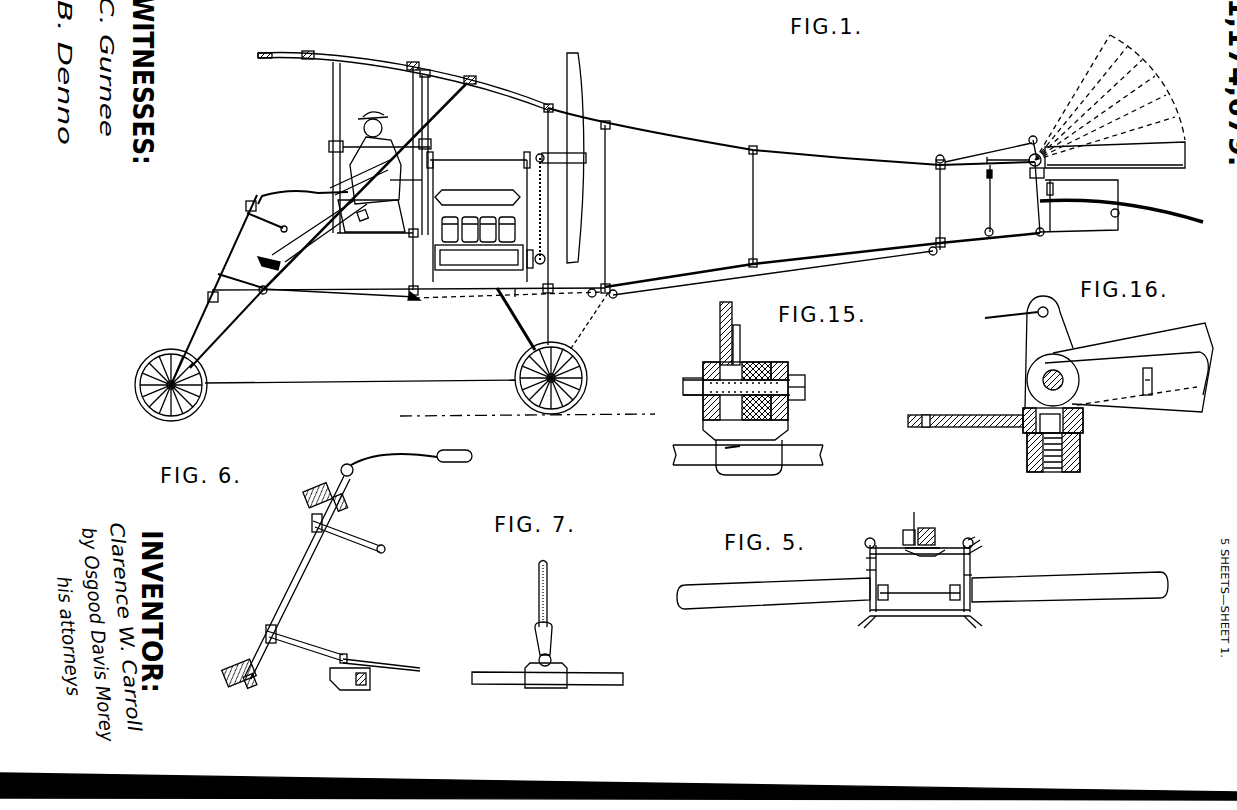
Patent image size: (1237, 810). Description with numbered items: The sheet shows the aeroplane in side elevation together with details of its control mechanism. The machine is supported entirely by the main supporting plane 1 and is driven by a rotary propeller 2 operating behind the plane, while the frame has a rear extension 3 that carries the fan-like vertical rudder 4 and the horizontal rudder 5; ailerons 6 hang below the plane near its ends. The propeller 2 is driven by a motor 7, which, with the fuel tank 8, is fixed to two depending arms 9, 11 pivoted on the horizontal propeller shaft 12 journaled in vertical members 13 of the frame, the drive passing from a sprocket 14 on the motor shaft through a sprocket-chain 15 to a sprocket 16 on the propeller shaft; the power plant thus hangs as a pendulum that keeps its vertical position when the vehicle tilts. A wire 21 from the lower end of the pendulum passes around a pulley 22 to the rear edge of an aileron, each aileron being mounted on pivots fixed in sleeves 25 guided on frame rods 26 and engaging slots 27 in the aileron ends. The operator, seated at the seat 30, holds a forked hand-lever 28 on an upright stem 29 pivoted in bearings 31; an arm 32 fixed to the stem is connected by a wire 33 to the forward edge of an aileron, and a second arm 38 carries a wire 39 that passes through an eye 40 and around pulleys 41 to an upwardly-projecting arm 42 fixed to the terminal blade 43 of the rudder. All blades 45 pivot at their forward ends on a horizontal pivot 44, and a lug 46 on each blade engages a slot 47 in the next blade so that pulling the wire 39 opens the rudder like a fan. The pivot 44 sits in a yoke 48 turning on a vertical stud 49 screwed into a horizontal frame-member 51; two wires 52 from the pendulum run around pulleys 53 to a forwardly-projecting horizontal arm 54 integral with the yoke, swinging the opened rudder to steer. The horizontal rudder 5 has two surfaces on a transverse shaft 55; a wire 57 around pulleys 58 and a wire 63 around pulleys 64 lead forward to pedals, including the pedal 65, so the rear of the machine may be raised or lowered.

In FIG. 1, the main supporting plane 1 is at (392, 57).
In FIG. 1, the rotary propeller 2 is at (580, 100).
In FIG. 1, the rear extension 3 is at (840, 156).
In FIG. 5, the rear extension 3 is at (866, 541).
In FIG. 1, the vertical rudder 4 is at (1115, 155).
In FIG. 5, the vertical rudder 4 is at (927, 530).
In FIG. 1, the horizontal rudder 5 is at (1156, 206).
In FIG. 5, the horizontal rudder 5 is at (922, 590).
In FIG. 1, the aileron 6 is at (395, 140).
In FIG. 1, the motor 7 is at (465, 262).
In FIG. 1, the fuel tank 8 is at (480, 190).
In FIG. 1, the depending arm 9 is at (437, 186).
In FIG. 1, the depending arm 11 is at (524, 181).
In FIG. 1, the propeller shaft 12 is at (480, 158).
In FIG. 1, the vertical member 13 is at (545, 128).
In FIG. 1, the sprocket 14 is at (545, 262).
In FIG. 1, the sprocket-chain 15 is at (545, 219).
In FIG. 1, the sprocket 16 is at (536, 155).
In FIG. 1, the wire 21 is at (430, 106).
In FIG. 1, the pulley 22 is at (431, 78).
In FIG. 1, the sleeve 25 is at (436, 143).
In FIG. 1, the rod 26 is at (341, 100).
In FIG. 1, the slot 27 is at (329, 145).
In FIG. 1, the hand-lever 28 is at (290, 192).
In FIG. 6, the hand-lever 28 is at (405, 462).
In FIG. 1, the upright stem 29 is at (232, 247).
In FIG. 6, the upright stem 29 is at (298, 576).
In FIG. 7, the upright stem 29 is at (538, 588).
In FIG. 1, the operator's seat 30 is at (350, 236).
In FIG. 1, the bearing 31 is at (245, 207).
In FIG. 6, the bearing 31 is at (346, 504).
In FIG. 1, the arm 32 is at (267, 222).
In FIG. 6, the arm 32 is at (348, 541).
In FIG. 1, the wire 33 is at (291, 222).
In FIG. 6, the wire 33 is at (386, 546).
In FIG. 1, the arm 38 is at (228, 277).
In FIG. 6, the arm 38 is at (310, 642).
In FIG. 7, the arm 38 is at (553, 643).
In FIG. 1, the wire 39 is at (298, 291).
In FIG. 16, the wire 39 is at (998, 312).
In FIG. 6, the wire 39 is at (403, 665).
In FIG. 7, the wire 39 is at (545, 670).
In FIG. 1, the eye 40 is at (258, 295).
In FIG. 6, the eye 40 is at (350, 656).
In FIG. 7, the eye 40 is at (540, 657).
In FIG. 1, the pulley 41 is at (615, 298).
In FIG. 1, the arm 42 is at (1032, 143).
In FIG. 15, the arm 42 is at (720, 339).
In FIG. 16, the arm 42 is at (1049, 352).
In FIG. 5, the arm 42 is at (912, 512).
In FIG. 1, the blade 43 is at (1084, 79).
In FIG. 15, the blade 43 is at (741, 355).
In FIG. 16, the blade 43 is at (1153, 338).
In FIG. 1, the horizontal pivot 44 is at (1031, 167).
In FIG. 15, the horizontal pivot 44 is at (806, 389).
In FIG. 16, the horizontal pivot 44 is at (1043, 380).
In FIG. 5, the horizontal pivot 44 is at (905, 535).
In FIG. 15, the blade 45 is at (760, 362).
In FIG. 16, the blade 45 is at (1126, 373).
In FIG. 16, the lug 46 is at (1142, 372).
In FIG. 16, the slot 47 is at (1143, 386).
In FIG. 1, the yoke 48 is at (1045, 163).
In FIG. 15, the yoke 48 is at (705, 421).
In FIG. 16, the yoke 48 is at (1083, 426).
In FIG. 5, the yoke 48 is at (937, 530).
In FIG. 16, the vertical stud 49 is at (1040, 430).
In FIG. 15, the horizontal frame-member 51 is at (748, 457).
In FIG. 16, the horizontal frame-member 51 is at (1081, 461).
In FIG. 5, the horizontal frame-member 51 is at (938, 556).
In FIG. 1, the wire 52 is at (662, 273).
In FIG. 5, the wire 52 is at (962, 545).
In FIG. 1, the pulley 53 is at (505, 292).
In FIG. 5, the pulley 53 is at (976, 543).
In FIG. 1, the horizontal arm 54 is at (995, 162).
In FIG. 15, the horizontal arm 54 is at (735, 450).
In FIG. 16, the horizontal arm 54 is at (960, 415).
In FIG. 1, the shaft 55 is at (1119, 216).
In FIG. 5, the shaft 55 is at (912, 593).
In FIG. 5, the wire 57 is at (868, 571).
In FIG. 5, the pulley 58 is at (866, 558).
In FIG. 1, the wire 63 is at (1051, 217).
In FIG. 5, the wire 63 is at (974, 576).
In FIG. 1, the pulley 64 is at (590, 297).
In FIG. 1, the pedal 65 is at (262, 263).